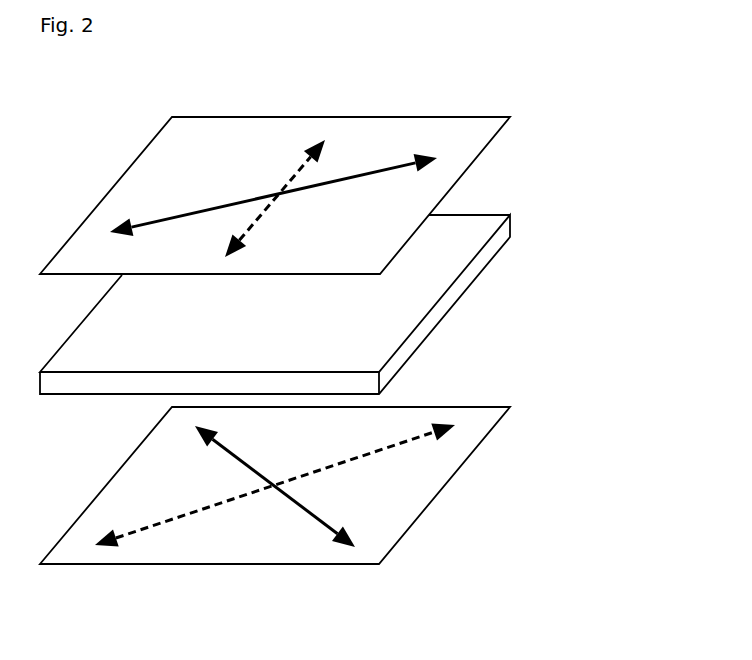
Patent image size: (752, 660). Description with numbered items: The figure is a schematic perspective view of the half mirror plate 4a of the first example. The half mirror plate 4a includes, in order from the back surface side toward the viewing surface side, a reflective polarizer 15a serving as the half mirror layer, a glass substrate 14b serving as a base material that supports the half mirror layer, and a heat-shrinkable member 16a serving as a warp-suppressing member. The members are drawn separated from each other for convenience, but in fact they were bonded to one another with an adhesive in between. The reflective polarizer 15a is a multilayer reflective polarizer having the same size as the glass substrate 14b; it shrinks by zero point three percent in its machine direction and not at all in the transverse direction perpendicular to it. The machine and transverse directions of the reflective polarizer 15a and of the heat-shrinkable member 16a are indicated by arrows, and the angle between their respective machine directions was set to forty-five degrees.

The half mirror plate 4a is at (88, 142).
The heat-shrinkable member 16a is at (327, 168).
The glass substrate 14b is at (458, 252).
The reflective polarizer 15a is at (327, 515).